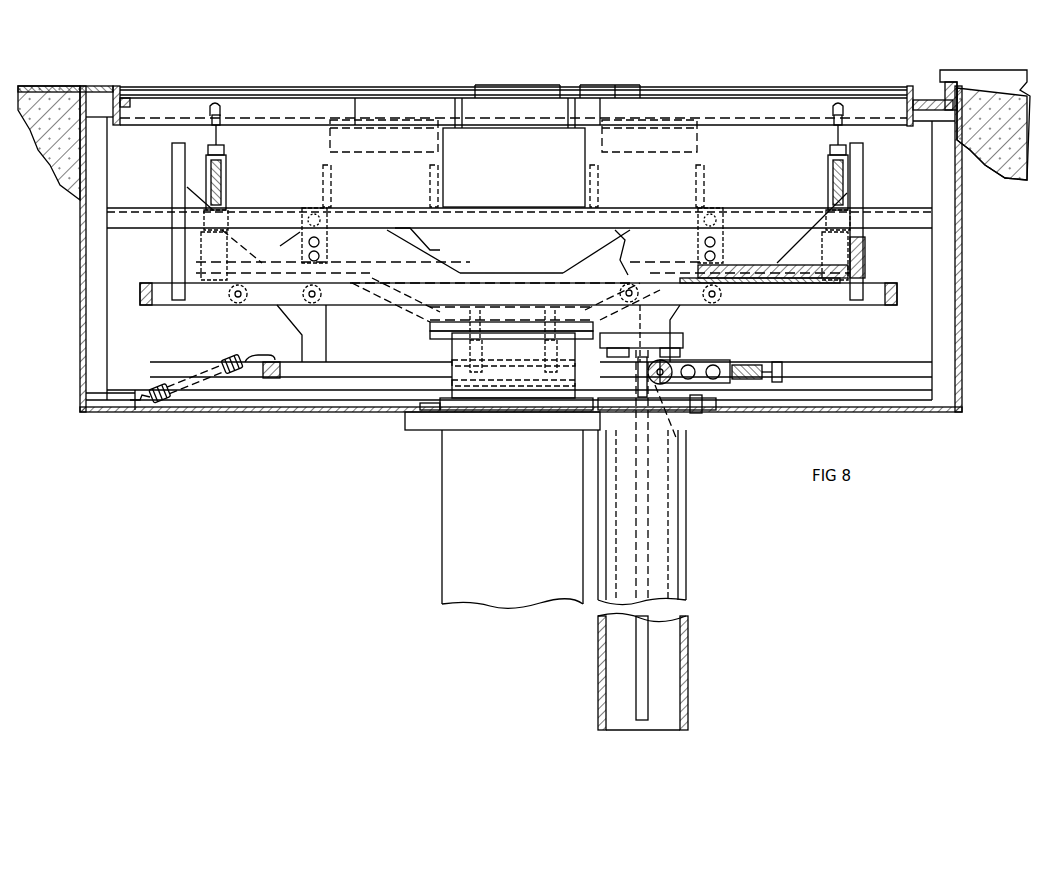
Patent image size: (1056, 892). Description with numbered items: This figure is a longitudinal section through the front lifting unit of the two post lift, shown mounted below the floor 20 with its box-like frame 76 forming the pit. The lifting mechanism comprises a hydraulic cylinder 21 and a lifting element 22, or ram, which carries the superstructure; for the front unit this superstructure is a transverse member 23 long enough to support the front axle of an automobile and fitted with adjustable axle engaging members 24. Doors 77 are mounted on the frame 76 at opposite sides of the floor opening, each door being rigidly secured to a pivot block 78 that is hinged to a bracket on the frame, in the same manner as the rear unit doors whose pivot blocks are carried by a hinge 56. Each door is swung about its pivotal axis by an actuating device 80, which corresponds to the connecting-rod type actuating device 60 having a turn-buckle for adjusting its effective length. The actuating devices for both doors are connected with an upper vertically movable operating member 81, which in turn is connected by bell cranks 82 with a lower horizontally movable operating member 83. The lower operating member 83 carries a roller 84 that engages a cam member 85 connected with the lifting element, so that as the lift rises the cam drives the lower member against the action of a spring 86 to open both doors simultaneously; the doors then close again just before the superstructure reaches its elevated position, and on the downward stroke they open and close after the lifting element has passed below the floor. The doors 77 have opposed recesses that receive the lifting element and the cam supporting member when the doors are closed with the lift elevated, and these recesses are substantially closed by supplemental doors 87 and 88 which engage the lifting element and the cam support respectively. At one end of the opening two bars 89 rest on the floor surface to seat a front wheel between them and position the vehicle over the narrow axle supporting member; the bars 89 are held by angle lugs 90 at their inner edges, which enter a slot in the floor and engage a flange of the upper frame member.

The floor 20 is at (30, 95).
The cylinder 21 is at (445, 535).
The lifting element 22 is at (458, 348).
The transverse member 23 is at (466, 280).
The adjustable axle engaging members 24 is at (175, 200).
The hinge 56 is at (383, 118).
The actuating device 60 is at (224, 146).
The box-like frame 76 is at (955, 414).
The doors 77 is at (790, 92).
The pivot block 78 is at (208, 106).
The actuating device 80 is at (226, 200).
The upper vertically movable operating member 81 is at (889, 306).
The bell cranks 82 is at (322, 337).
The lower horizontally movable operating member 83 is at (380, 368).
The roller 84 is at (672, 365).
The cam member 85 is at (678, 438).
The spring 86 is at (178, 372).
The supplemental door 87 is at (545, 92).
The supplemental door 88 is at (640, 92).
The bars 89 is at (983, 72).
The angle lugs 90 is at (932, 96).